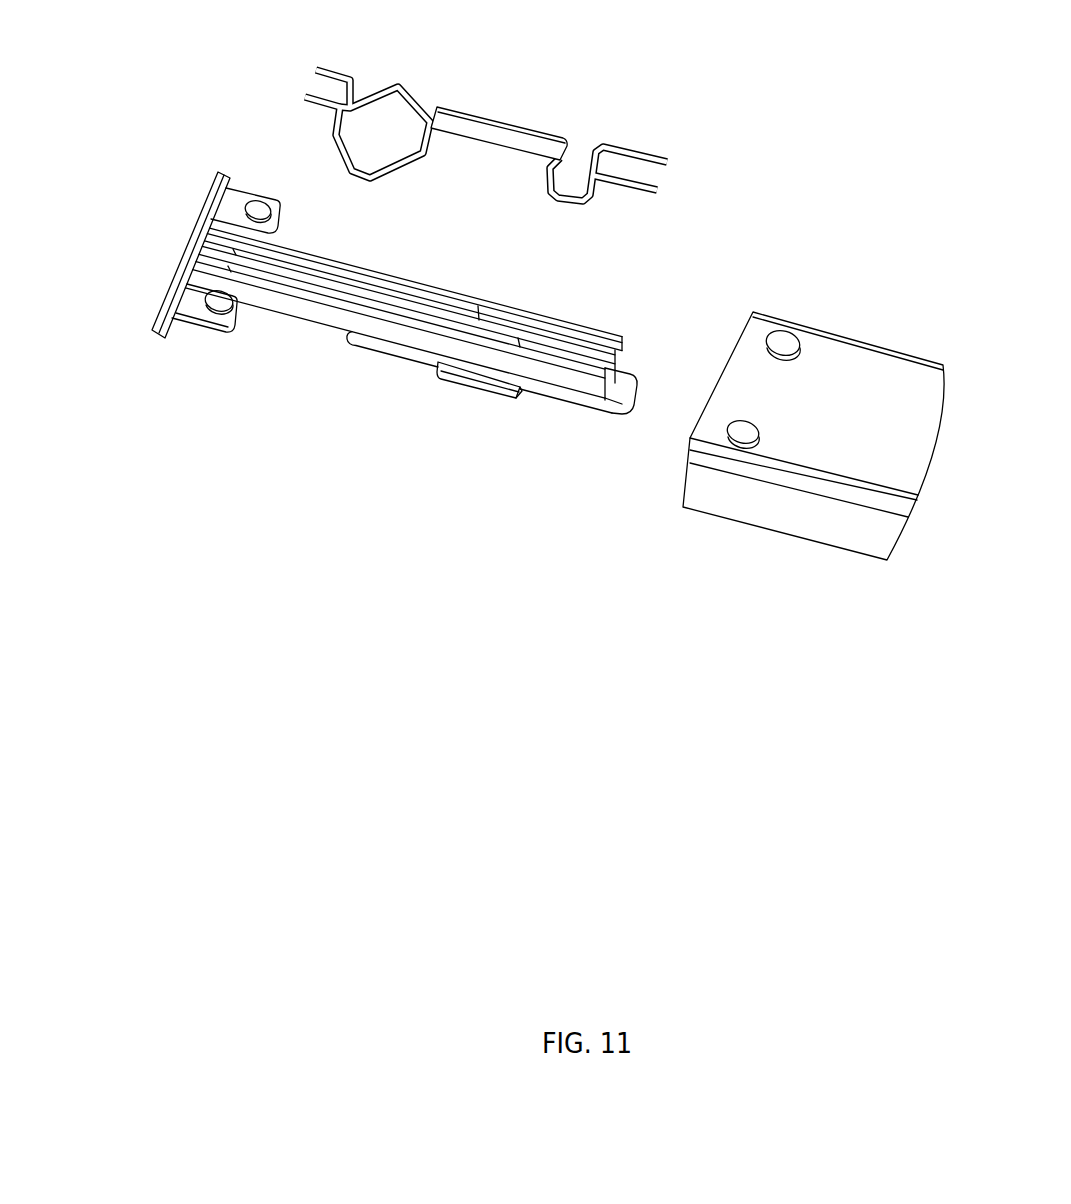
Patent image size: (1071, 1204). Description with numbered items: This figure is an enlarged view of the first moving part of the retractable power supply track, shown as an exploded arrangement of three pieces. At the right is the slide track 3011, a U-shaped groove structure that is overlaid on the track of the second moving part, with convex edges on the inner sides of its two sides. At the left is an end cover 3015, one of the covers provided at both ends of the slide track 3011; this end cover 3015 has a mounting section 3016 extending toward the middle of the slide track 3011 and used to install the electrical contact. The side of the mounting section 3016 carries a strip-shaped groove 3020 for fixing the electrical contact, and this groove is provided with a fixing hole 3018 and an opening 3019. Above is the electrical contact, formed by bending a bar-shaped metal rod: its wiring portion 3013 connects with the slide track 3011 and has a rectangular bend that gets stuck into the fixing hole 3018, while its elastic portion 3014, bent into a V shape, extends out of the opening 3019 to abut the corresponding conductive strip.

The slide track 3011 is at (872, 367).
The wiring portion 3013 is at (525, 125).
The elastic portion 3014 is at (405, 86).
The end cover 3015 is at (178, 266).
The mounting section 3016 is at (438, 345).
The fixing hole 3018 is at (505, 322).
The opening 3019 is at (412, 300).
The strip-shaped groove 3020 is at (315, 277).